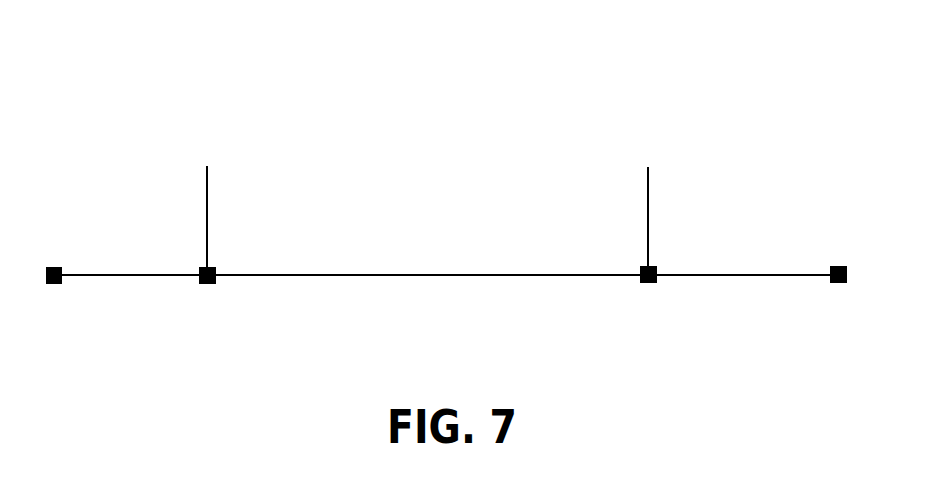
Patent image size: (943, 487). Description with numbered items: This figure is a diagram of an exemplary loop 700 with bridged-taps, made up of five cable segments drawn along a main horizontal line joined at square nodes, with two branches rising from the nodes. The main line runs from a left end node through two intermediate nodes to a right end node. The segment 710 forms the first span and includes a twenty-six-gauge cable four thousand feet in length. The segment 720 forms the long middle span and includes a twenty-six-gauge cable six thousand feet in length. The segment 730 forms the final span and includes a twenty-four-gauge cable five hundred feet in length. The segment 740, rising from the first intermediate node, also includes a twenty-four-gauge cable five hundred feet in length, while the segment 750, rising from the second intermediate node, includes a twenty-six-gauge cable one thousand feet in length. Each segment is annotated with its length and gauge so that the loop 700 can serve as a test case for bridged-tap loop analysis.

The loop 700 is at (148, 52).
The segment 710 is at (132, 275).
The segment 720 is at (433, 275).
The segment 730 is at (755, 275).
The segment 740 is at (207, 218).
The segment 750 is at (648, 217).